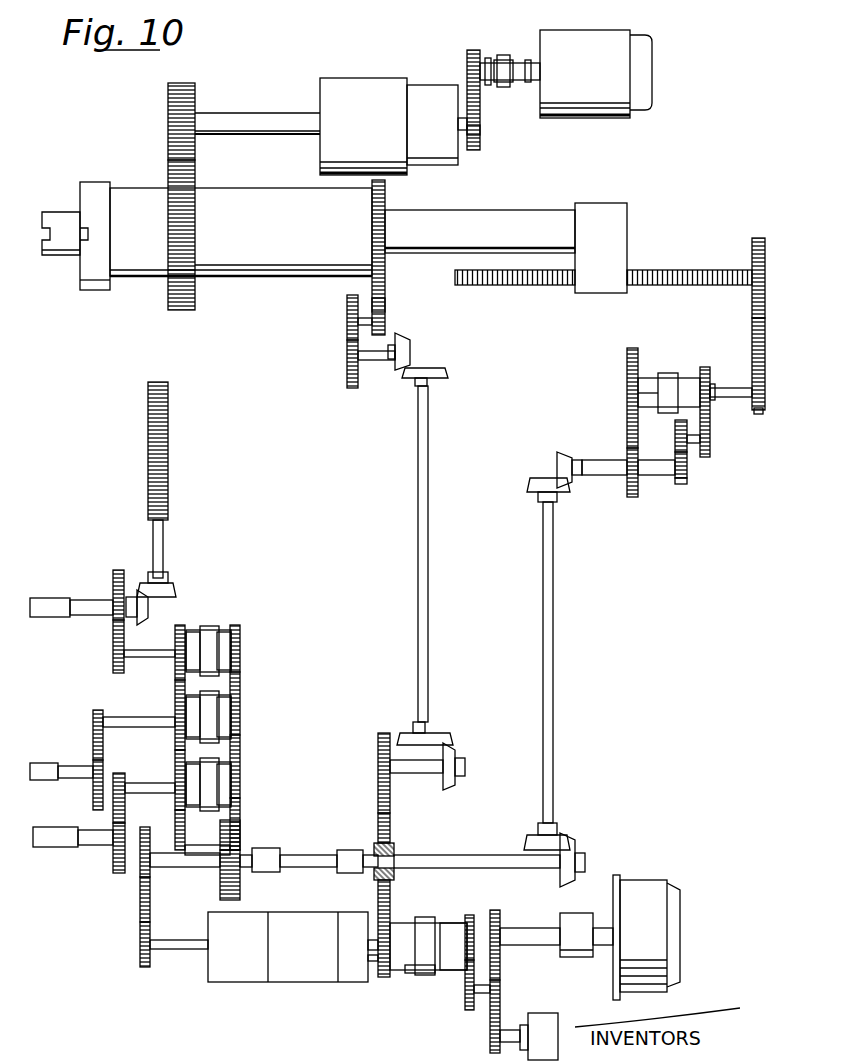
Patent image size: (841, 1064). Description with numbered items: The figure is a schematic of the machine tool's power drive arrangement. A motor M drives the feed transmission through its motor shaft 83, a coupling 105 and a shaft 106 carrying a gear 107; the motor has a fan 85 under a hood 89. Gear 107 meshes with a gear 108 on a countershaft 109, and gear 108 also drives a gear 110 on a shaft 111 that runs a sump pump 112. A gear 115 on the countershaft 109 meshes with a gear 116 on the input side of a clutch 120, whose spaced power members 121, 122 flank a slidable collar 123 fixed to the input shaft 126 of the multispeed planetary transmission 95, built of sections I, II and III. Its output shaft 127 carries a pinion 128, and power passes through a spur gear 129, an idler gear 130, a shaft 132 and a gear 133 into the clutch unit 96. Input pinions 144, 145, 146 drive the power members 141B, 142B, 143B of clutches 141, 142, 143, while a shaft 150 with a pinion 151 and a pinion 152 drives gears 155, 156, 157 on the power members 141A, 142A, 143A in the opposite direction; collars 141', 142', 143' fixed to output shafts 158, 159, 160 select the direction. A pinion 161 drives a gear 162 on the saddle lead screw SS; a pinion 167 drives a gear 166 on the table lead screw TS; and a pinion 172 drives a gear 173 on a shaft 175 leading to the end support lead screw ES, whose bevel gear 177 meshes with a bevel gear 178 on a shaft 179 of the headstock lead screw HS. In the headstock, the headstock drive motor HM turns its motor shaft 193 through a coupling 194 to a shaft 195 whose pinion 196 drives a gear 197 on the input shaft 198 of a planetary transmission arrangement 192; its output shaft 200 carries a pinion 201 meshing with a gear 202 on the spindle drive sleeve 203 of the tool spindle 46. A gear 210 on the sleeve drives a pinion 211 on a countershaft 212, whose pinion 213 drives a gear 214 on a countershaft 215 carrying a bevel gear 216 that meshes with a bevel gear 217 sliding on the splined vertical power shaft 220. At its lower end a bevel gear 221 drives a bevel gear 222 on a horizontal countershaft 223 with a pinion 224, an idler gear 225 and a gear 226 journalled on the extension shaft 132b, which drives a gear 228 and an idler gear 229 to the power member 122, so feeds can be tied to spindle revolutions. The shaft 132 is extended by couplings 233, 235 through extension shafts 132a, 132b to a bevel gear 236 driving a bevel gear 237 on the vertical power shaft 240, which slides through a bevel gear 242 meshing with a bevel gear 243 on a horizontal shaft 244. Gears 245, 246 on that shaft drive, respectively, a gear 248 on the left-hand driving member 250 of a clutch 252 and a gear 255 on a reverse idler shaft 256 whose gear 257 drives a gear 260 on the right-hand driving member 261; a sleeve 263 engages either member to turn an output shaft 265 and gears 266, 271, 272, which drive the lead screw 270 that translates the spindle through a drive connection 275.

The tool spindle 46 is at (63, 208).
The motor shaft 83 is at (612, 928).
The fan 85 is at (672, 938).
The hood 89 is at (671, 897).
The planetary transmission 95 is at (213, 998).
The clutch unit 96 is at (248, 589).
The coupling 105 is at (580, 958).
The shaft 106 is at (530, 930).
The gear 107 is at (500, 913).
The gear 108 is at (492, 990).
The countershaft 109 is at (491, 1015).
The gear 110 is at (490, 1046).
The shaft 111 is at (512, 1030).
The sump pump 112 is at (545, 1018).
The gear 115 is at (466, 1002).
The gear 116 is at (472, 915).
The clutch 120 is at (416, 975).
The power member 121 is at (450, 922).
The power member 122 is at (410, 973).
The slidable collar 123 is at (420, 918).
The input shaft 126 is at (378, 960).
The output shaft 127 is at (176, 947).
The output pinion 128 is at (140, 948).
The spur gear 129 is at (140, 893).
The idler gear 130 is at (140, 918).
The shaft 132 is at (193, 862).
The extension shaft 132a is at (293, 868).
The extension shaft 132b is at (492, 849).
The gear 133 is at (220, 895).
The clutch 141 is at (238, 783).
The power member 141A is at (182, 760).
The power member 141B is at (241, 791).
The clutch collar 141' is at (213, 780).
The clutch 142 is at (238, 717).
The power member 142A is at (182, 710).
The power member 142B is at (241, 728).
The clutch collar 142' is at (213, 712).
The clutch 143 is at (239, 647).
The power member 143A is at (192, 640).
The power member 143B is at (232, 660).
The clutch collar 143' is at (228, 638).
The input pinion 144 is at (241, 806).
The input pinion 145 is at (241, 743).
The input pinion 146 is at (241, 681).
The idler shaft 150 is at (200, 848).
The pinion 151 is at (242, 833).
The pinion 152 is at (176, 846).
The gear 155 is at (178, 780).
The gear 156 is at (176, 722).
The gear 157 is at (177, 667).
The clutch output shaft 158 is at (150, 792).
The clutch output shaft 159 is at (110, 720).
The clutch output shaft 160 is at (122, 660).
The pinion 161 is at (176, 775).
The gear 162 is at (113, 866).
The gear 166 is at (93, 757).
The pinion 167 is at (93, 722).
The pinion 172 is at (113, 645).
The gear 173 is at (113, 580).
The shaft 175 is at (86, 604).
The bevel gear 177 is at (145, 623).
The bevel gear 178 is at (176, 592).
The shaft 179 is at (163, 535).
The planetary transmission arrangement 192 is at (381, 70).
The motor shaft 193 is at (530, 60).
The coupling 194 is at (521, 86).
The shaft 195 is at (488, 60).
The pinion 196 is at (467, 64).
The gear 197 is at (482, 133).
The transmission input shaft 198 is at (462, 130).
The output shaft 200 is at (265, 120).
The pinion 201 is at (170, 112).
The gear 202 is at (168, 305).
The spindle drive sleeve 203 is at (250, 278).
The gear 210 is at (386, 276).
The pinion 211 is at (386, 304).
The countershaft 212 is at (364, 296).
The pinion 213 is at (347, 316).
The gear 214 is at (347, 344).
The countershaft 215 is at (376, 362).
The bevel gear 216 is at (411, 347).
The bevel gear 217 is at (440, 372).
The vertical power shaft 220 is at (418, 492).
The bevel gear 221 is at (404, 738).
The bevel gear 222 is at (450, 790).
The horizontal countershaft 223 is at (418, 771).
The pinion 224 is at (378, 745).
The idler gear 225 is at (390, 822).
The gear 226 is at (392, 847).
The gear 228 is at (383, 985).
The idler gear 229 is at (379, 900).
The coupling 233 is at (282, 860).
The coupling 235 is at (350, 850).
The bevel gear 236 is at (578, 850).
The bevel gear 237 is at (568, 838).
The vertical power shaft 240 is at (553, 630).
The bevel gear 242 is at (545, 478).
The bevel gear 243 is at (558, 462).
The horizontal shaft 244 is at (608, 476).
The gear 245 is at (632, 498).
The gear 246 is at (688, 484).
The gear 248 is at (627, 373).
The left-hand driving member 250 is at (647, 378).
The clutch unit 252 is at (643, 399).
The gear 255 is at (678, 438).
The reverse idler shaft 256 is at (690, 462).
The gear 257 is at (711, 452).
The gear 260 is at (712, 388).
The right-hand driving member 261 is at (702, 378).
The sleeve 263 is at (666, 373).
The output shaft 265 is at (738, 398).
The gear 266 is at (758, 414).
The lead screw 270 is at (678, 272).
The gear 271 is at (752, 326).
The gear 272 is at (752, 252).
The drive connection 275 is at (635, 229).
The headstock drive motor HM is at (614, 30).
The headstock lead screw HS is at (168, 448).
The end support lead screw ES is at (42, 600).
The table lead screw TS is at (42, 767).
The saddle lead screw SS is at (50, 848).
The motor M is at (633, 885).